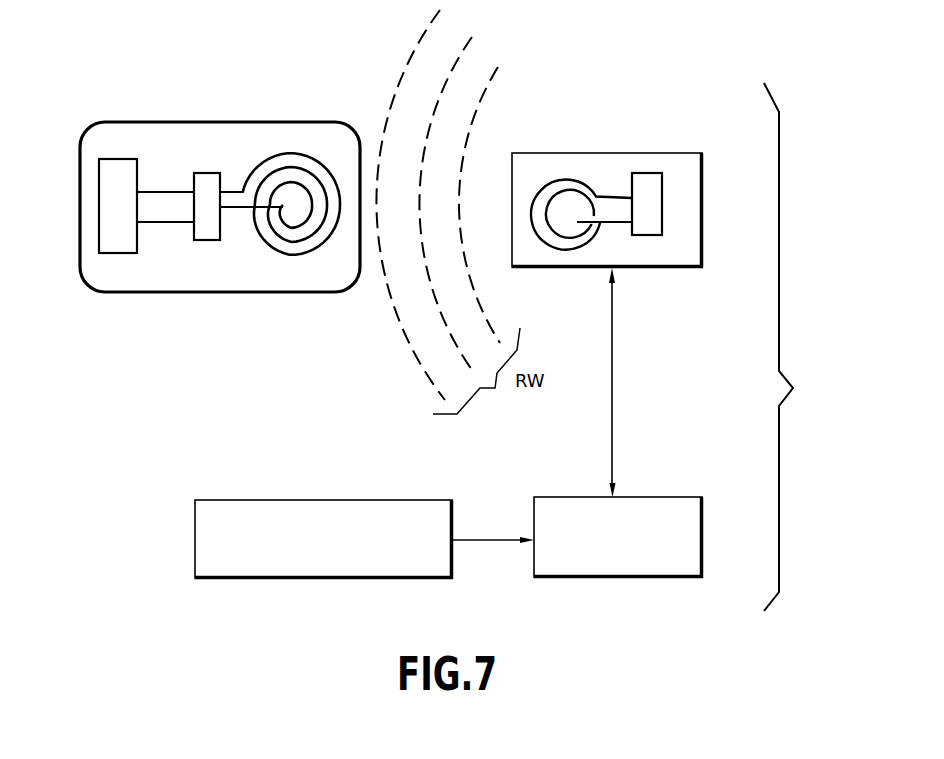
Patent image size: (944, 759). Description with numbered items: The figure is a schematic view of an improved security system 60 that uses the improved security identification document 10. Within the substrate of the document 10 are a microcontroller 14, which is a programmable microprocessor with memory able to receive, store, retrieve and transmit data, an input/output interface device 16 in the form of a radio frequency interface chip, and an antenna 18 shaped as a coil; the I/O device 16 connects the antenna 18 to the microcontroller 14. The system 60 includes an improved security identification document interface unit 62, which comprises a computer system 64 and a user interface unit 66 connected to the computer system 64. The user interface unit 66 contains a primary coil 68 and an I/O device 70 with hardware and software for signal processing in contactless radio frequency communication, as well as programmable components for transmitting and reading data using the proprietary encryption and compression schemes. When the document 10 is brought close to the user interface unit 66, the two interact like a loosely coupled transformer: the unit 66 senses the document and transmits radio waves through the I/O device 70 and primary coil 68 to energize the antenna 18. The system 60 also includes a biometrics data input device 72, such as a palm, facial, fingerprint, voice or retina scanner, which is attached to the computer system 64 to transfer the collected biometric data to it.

The improved security identification document 10 is at (91, 121).
The microcontroller 14 is at (99, 254).
The input/output interface device 16 is at (207, 241).
The antenna 18 is at (297, 256).
The improved security system 60 is at (158, 461).
The improved security identification document interface unit 62 is at (796, 347).
The computer system 64 is at (685, 500).
The user interface unit 66 is at (700, 157).
The primary coil 68 is at (561, 176).
The I/O device 70 is at (662, 219).
The biometrics data input device 72 is at (297, 578).